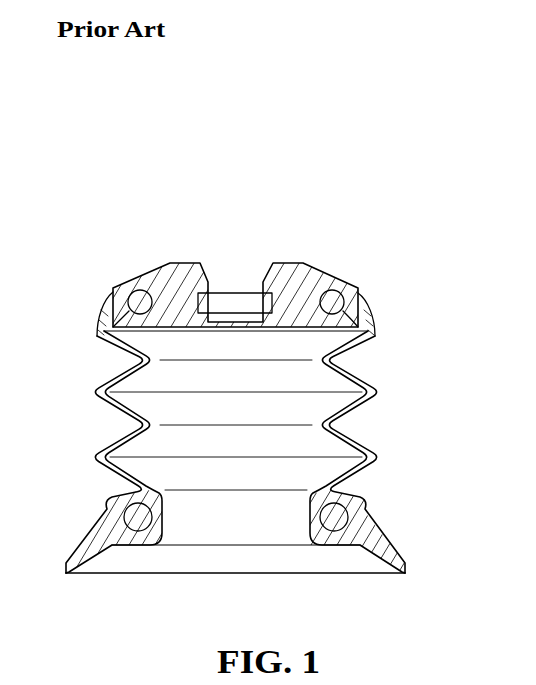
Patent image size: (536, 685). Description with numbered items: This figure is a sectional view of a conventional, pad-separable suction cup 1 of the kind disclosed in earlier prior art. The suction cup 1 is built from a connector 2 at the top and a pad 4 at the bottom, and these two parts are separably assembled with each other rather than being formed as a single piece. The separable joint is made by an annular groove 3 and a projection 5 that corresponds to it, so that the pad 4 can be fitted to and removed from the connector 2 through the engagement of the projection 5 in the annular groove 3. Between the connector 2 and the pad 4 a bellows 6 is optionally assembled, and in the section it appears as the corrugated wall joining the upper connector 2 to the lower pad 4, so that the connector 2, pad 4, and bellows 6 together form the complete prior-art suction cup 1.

The suction cup 1 is at (350, 134).
The connector 2 is at (338, 275).
The annular groove 3 is at (130, 295).
The pad 4 is at (384, 541).
The projection 5 is at (322, 297).
The bellows 6 is at (374, 391).